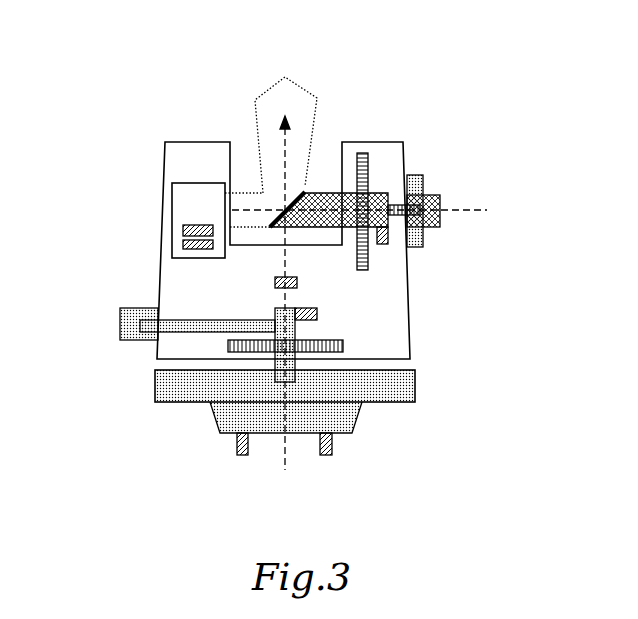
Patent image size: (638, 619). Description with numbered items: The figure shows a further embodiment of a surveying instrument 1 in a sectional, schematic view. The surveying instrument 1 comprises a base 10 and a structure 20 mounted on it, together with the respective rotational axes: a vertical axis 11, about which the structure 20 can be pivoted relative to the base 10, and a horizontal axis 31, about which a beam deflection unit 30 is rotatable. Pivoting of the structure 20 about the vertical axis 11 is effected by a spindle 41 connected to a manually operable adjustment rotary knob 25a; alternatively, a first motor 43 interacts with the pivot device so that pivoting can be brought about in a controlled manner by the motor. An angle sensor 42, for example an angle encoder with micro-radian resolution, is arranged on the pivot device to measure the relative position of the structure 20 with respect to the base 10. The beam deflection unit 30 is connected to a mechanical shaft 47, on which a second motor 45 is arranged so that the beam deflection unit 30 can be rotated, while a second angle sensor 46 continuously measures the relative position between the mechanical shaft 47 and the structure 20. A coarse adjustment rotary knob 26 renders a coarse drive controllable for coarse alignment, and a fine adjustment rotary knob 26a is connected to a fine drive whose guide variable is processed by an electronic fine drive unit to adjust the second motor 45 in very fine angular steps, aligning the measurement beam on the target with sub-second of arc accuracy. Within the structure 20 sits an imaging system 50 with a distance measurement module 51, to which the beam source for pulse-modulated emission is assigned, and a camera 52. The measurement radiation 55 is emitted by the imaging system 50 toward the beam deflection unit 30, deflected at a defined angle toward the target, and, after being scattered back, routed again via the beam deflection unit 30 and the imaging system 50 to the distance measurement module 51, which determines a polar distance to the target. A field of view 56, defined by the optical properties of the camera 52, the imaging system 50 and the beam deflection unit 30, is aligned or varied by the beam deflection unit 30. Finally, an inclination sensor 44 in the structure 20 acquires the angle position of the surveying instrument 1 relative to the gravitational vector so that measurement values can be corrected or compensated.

The surveying instrument 1 is at (135, 67).
The base 10 is at (372, 393).
The vertical axis 11 is at (283, 447).
The structure 20 is at (178, 153).
The adjustment rotary knob 25a is at (132, 337).
The coarse adjustment rotary knob 26 is at (415, 185).
The fine adjustment rotary knob 26a is at (432, 195).
The beam deflection unit 30 is at (305, 192).
The horizontal axis 31 is at (442, 213).
The spindle 41 is at (180, 322).
The angle sensor 42 is at (230, 345).
The first motor 43 is at (318, 315).
The inclination sensor 44 is at (297, 283).
The second motor 45 is at (383, 240).
The second angle sensor 46 is at (363, 158).
The mechanical shaft 47 is at (320, 205).
The imaging system 50 is at (185, 200).
The distance measurement module 51 is at (183, 233).
The camera 52 is at (182, 247).
The measurement radiation 55 is at (285, 142).
The field of view 56 is at (281, 84).